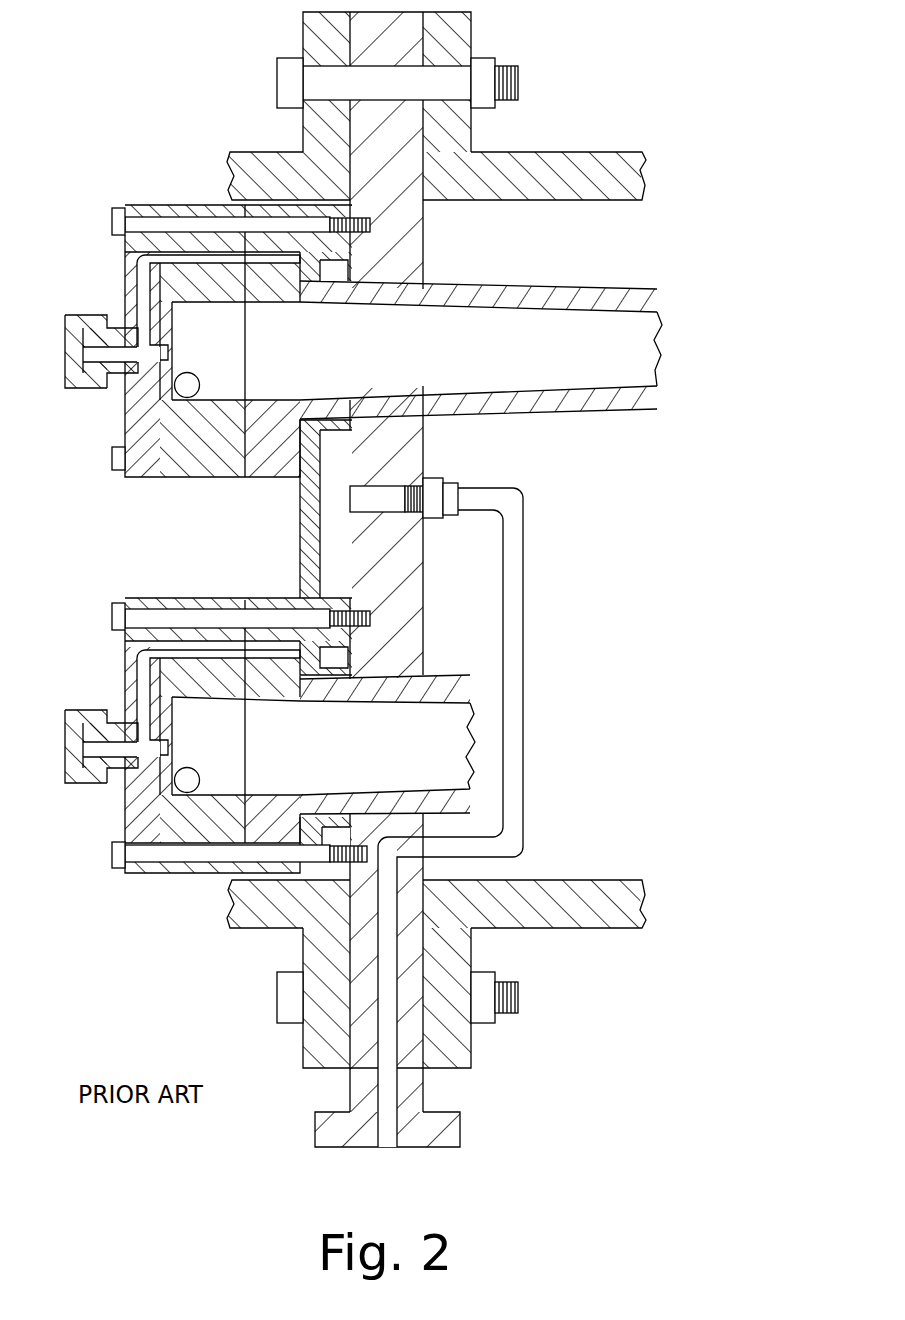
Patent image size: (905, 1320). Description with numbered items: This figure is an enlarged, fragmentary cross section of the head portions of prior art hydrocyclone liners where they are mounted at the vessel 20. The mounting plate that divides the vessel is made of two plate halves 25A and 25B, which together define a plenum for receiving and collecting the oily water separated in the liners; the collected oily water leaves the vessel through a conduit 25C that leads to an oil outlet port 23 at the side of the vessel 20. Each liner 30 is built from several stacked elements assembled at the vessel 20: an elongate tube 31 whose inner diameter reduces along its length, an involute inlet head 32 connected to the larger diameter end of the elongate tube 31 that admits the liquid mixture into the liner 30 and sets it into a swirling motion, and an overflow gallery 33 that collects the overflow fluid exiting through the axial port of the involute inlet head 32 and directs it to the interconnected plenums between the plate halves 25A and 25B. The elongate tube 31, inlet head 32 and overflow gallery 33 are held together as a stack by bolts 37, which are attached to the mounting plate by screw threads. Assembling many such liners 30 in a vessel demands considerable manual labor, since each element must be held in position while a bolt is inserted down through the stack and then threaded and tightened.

The vessel 20 is at (548, 162).
The oil outlet port 23 is at (393, 1147).
The plate half 25A is at (428, 440).
The plate half 25B is at (300, 560).
The conduit 25C is at (525, 627).
The liner 30 is at (650, 441).
The elongate tube 31 is at (646, 290).
The involute inlet head 32 is at (202, 205).
The overflow gallery 33 is at (142, 204).
The bolts 37 is at (112, 232).